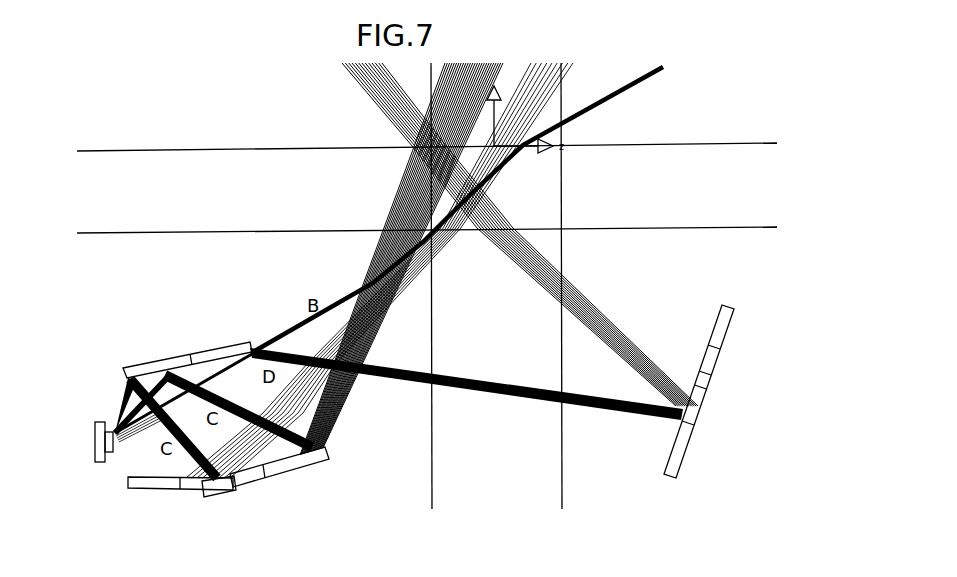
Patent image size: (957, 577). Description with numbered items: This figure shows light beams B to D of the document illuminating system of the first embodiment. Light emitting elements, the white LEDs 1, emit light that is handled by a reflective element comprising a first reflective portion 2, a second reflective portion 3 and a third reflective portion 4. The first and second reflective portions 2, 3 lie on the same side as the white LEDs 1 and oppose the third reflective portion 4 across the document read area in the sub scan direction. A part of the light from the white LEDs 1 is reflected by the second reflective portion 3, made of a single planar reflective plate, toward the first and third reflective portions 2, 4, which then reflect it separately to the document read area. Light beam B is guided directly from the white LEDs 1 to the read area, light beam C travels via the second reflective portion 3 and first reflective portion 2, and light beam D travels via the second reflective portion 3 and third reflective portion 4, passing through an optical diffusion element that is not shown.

The white LEDs 1 is at (95, 437).
The first reflective portion 2 is at (177, 490).
The second reflective portion 3 is at (175, 354).
The third reflective portion 4 is at (718, 370).